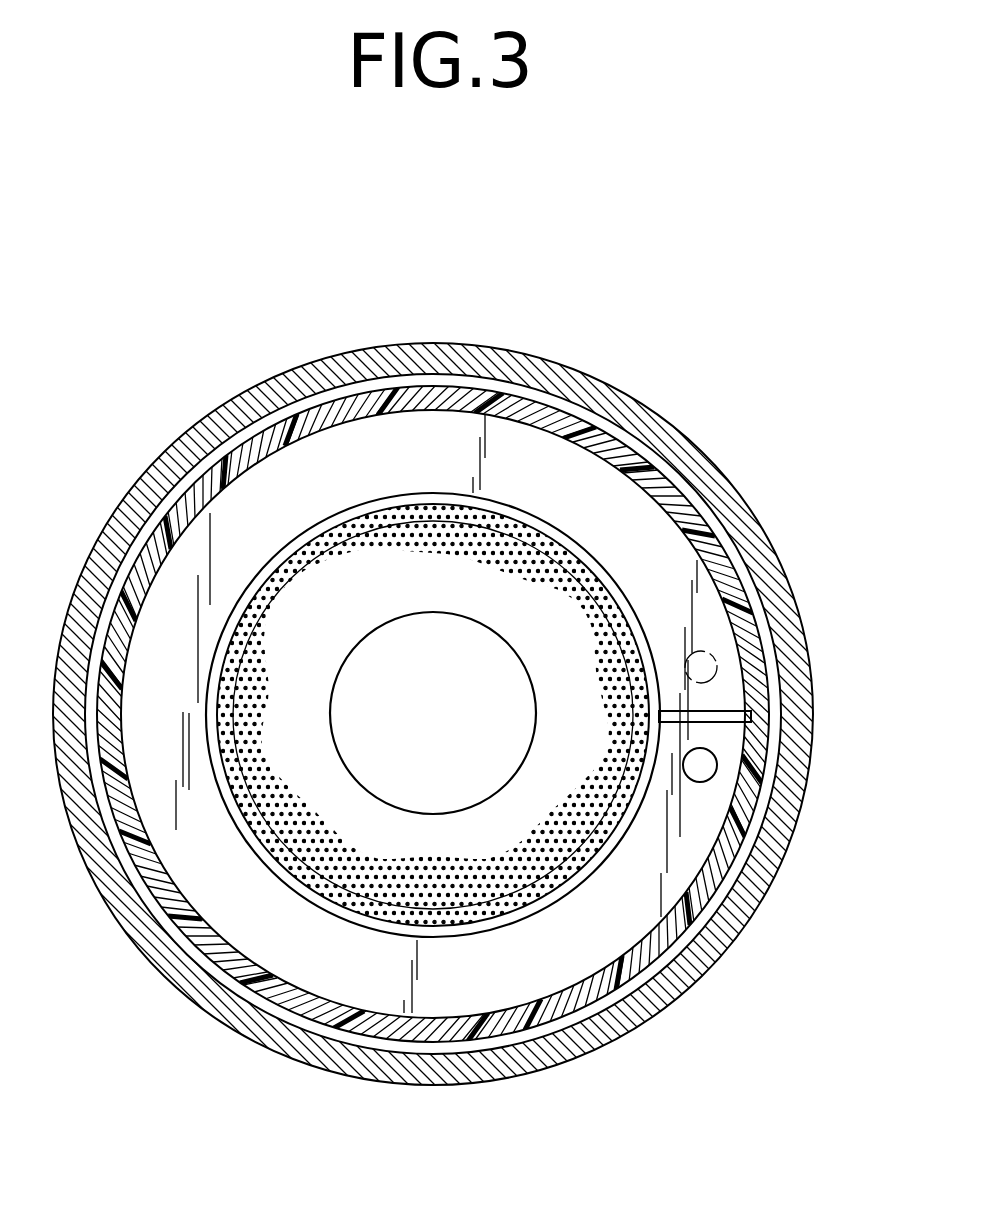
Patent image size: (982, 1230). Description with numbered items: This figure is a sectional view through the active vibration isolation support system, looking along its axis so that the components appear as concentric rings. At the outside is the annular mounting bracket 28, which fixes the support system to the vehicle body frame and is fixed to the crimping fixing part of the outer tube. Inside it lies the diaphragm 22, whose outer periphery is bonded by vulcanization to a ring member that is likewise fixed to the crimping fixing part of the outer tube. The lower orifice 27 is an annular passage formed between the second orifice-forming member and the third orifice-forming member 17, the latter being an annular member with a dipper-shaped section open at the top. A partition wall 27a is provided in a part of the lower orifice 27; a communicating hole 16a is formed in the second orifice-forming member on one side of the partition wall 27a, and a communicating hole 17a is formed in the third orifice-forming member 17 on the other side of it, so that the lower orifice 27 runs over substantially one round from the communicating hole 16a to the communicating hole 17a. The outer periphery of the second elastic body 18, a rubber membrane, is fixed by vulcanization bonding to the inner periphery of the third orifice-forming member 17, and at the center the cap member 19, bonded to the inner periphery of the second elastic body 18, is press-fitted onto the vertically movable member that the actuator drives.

The mounting bracket 28 is at (637, 413).
The lower orifice 27 is at (402, 478).
The diaphragm 22 is at (278, 440).
The second elastic body 18 is at (341, 835).
The third orifice-forming member 17 is at (433, 500).
The cap member 19 is at (450, 735).
The partition wall 27a is at (660, 712).
The communicating hole 16a is at (683, 653).
The communicating hole 17a is at (683, 777).